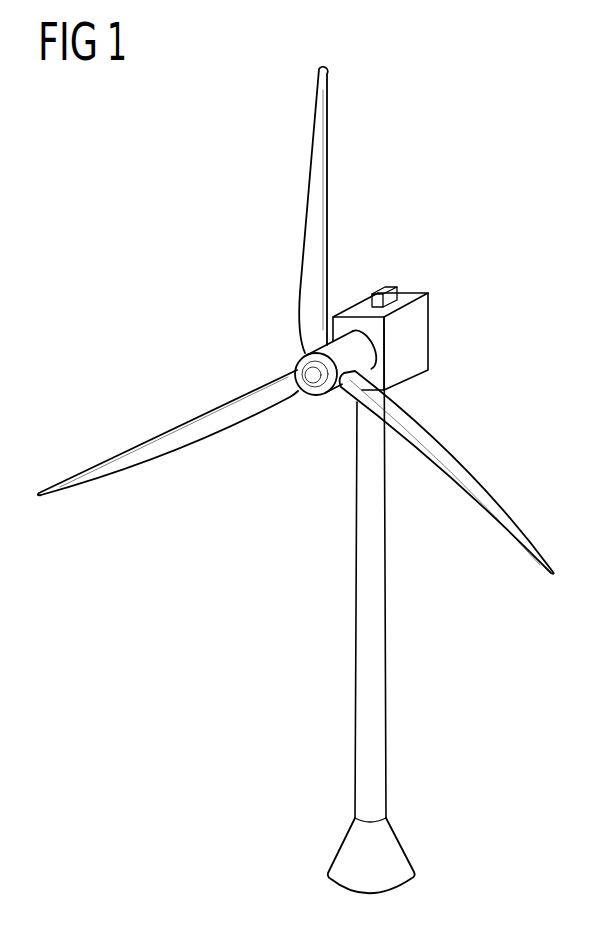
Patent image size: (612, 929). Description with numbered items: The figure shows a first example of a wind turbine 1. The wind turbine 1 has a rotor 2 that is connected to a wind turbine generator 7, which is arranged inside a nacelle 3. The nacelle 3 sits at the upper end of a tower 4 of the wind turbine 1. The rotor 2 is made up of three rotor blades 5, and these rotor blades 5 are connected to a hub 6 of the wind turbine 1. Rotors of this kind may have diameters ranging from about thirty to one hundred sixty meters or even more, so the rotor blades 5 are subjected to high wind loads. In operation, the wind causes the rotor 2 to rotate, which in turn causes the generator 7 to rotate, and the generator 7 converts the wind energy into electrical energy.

The wind turbine 1 is at (139, 211).
The rotor 2 is at (145, 419).
The nacelle 3 is at (416, 343).
The tower 4 is at (375, 767).
The rotor blade 5 is at (311, 222).
The hub 6 is at (358, 360).
The wind turbine generator 7 is at (364, 325).